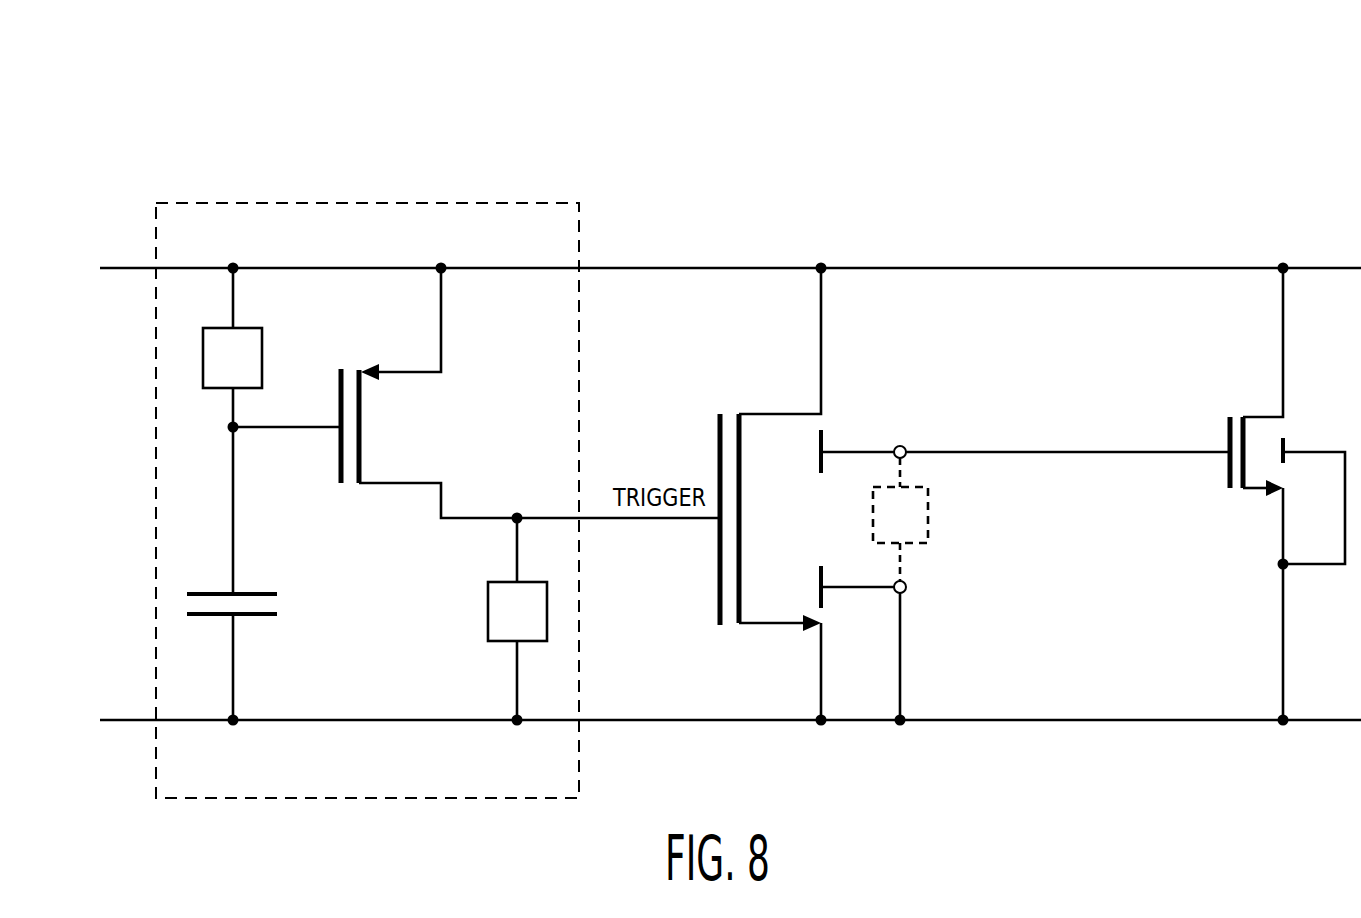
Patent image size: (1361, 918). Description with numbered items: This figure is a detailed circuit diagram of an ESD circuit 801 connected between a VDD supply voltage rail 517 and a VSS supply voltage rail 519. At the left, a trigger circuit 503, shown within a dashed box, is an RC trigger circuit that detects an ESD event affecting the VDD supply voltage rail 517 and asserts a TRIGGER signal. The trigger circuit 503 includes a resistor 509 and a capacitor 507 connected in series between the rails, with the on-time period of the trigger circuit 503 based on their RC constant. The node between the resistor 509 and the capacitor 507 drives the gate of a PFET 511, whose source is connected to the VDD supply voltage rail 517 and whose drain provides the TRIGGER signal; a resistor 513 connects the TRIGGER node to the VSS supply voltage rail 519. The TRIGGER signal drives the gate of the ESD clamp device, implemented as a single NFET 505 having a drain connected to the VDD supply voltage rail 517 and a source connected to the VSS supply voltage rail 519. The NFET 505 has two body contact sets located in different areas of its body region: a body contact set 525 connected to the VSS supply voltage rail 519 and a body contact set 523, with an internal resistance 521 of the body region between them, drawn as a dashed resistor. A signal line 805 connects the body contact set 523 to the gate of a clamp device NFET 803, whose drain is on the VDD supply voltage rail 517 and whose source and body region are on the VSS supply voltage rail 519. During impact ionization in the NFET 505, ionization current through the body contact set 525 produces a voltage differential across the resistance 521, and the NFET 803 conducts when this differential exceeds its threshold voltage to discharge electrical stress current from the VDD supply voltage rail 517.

The ESD circuit 801 is at (165, 124).
The trigger circuit 503 is at (483, 200).
The NFET 505 is at (718, 437).
The capacitor 507 is at (258, 616).
The resistor 509 is at (262, 364).
The PFET 511 is at (362, 430).
The resistor 513 is at (488, 613).
The VDD supply voltage rail 517 is at (753, 267).
The VSS supply voltage rail 519 is at (752, 719).
The internal resistance 521 is at (929, 510).
The body contact set 523 is at (823, 440).
The body contact set 525 is at (820, 580).
The NFET 803 is at (1228, 468).
The signal line 805 is at (1066, 450).